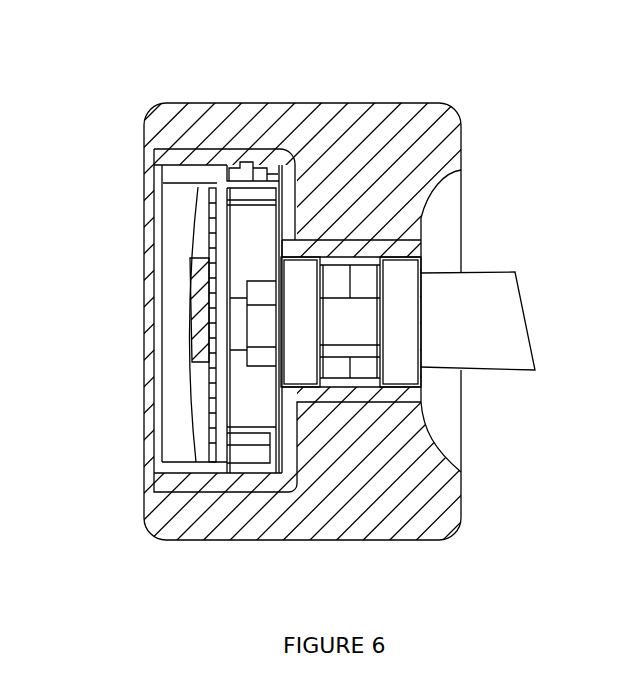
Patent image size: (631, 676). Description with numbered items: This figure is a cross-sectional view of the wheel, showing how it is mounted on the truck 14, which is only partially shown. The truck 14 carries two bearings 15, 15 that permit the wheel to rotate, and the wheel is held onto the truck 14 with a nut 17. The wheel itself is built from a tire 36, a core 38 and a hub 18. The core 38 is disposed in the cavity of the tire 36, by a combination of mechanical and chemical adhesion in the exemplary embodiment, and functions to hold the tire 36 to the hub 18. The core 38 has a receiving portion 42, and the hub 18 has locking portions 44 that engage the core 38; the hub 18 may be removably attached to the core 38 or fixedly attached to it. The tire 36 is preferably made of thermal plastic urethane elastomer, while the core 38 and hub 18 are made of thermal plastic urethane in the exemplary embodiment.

The truck 14 is at (493, 273).
The bearings 15 is at (423, 385).
The nut 17 is at (255, 370).
The hub 18 is at (185, 393).
The tire 36 is at (192, 98).
The core 38 is at (380, 428).
The receiving portion 42 is at (268, 165).
The locking portions 44 is at (238, 178).